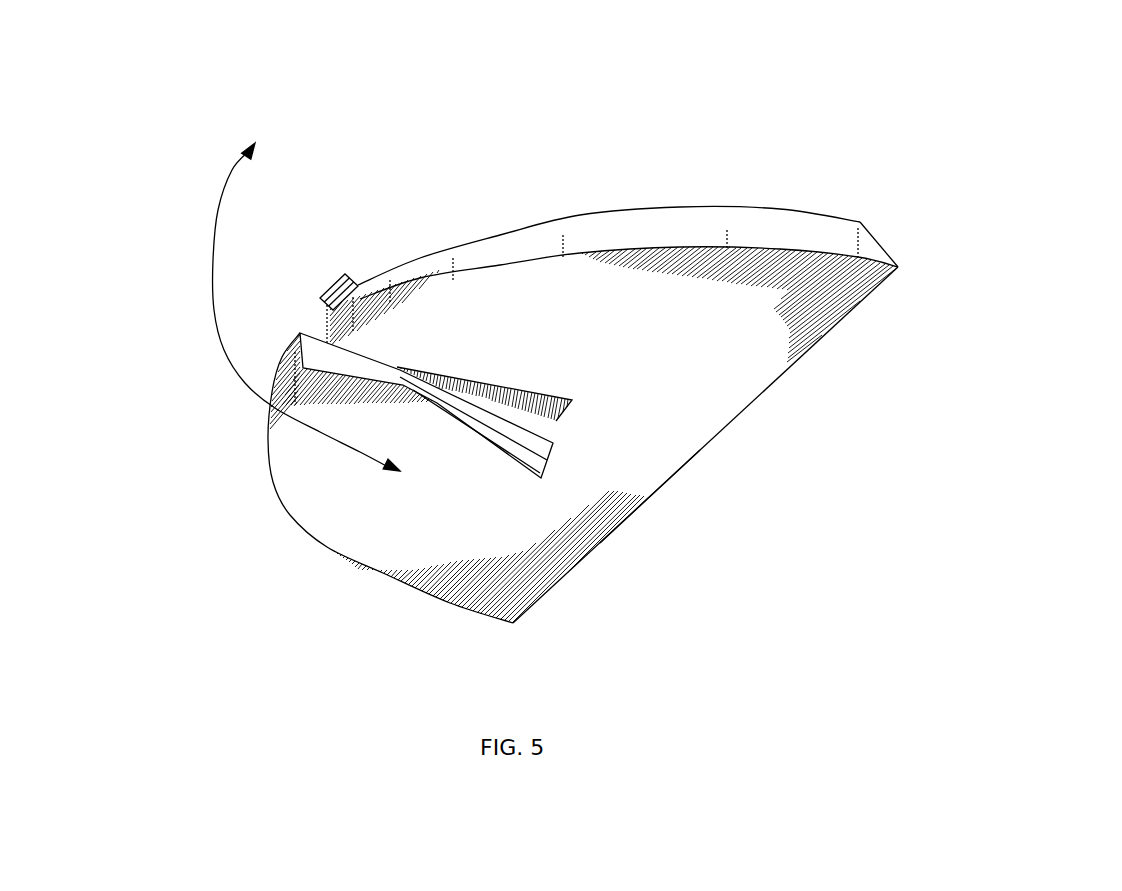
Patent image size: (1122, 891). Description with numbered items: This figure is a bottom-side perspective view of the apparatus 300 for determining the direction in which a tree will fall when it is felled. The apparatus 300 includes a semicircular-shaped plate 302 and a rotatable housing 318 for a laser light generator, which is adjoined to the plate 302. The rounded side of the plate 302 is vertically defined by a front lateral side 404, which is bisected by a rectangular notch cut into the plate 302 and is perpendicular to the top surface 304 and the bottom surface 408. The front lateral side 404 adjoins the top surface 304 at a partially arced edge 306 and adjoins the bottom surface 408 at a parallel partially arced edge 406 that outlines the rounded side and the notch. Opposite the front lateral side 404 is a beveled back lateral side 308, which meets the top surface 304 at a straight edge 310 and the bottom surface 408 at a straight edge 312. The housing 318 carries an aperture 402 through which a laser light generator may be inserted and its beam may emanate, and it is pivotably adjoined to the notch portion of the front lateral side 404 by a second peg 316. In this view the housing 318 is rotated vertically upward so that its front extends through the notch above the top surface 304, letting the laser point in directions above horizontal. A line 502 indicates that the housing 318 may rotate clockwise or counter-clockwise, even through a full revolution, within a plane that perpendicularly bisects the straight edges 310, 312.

The apparatus 300 is at (750, 106).
The semicircular-shaped plate 302 is at (165, 235).
The top surface 304 is at (537, 195).
The partially arced edge 306 is at (498, 238).
The back lateral side 308 is at (888, 238).
The straight edge 310 is at (862, 224).
The straight edge 312 is at (743, 410).
The second peg 316 is at (410, 386).
The rotatable housing 318 is at (480, 432).
The aperture 402 is at (335, 287).
The front lateral side 404 is at (628, 228).
The partially arced edge 406 is at (503, 273).
The bottom surface 408 is at (668, 465).
The line 502 is at (212, 310).